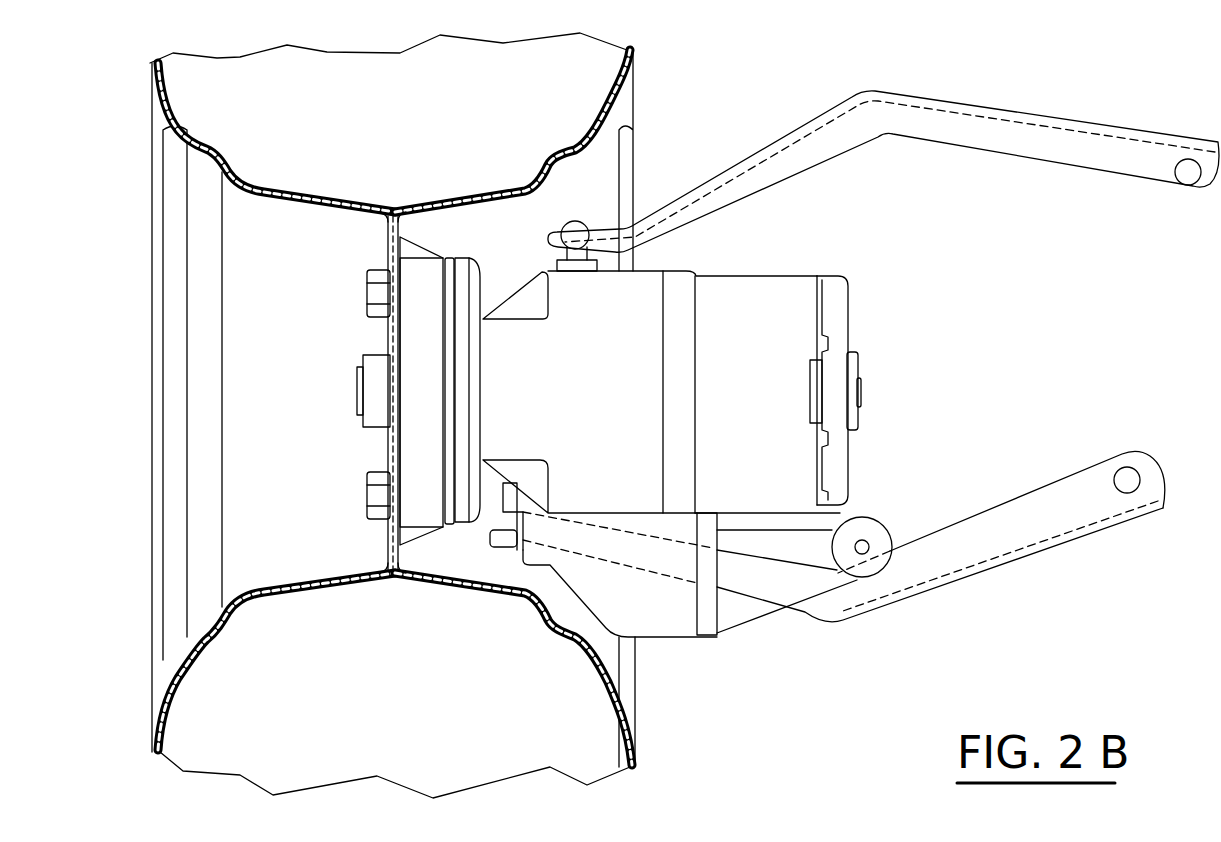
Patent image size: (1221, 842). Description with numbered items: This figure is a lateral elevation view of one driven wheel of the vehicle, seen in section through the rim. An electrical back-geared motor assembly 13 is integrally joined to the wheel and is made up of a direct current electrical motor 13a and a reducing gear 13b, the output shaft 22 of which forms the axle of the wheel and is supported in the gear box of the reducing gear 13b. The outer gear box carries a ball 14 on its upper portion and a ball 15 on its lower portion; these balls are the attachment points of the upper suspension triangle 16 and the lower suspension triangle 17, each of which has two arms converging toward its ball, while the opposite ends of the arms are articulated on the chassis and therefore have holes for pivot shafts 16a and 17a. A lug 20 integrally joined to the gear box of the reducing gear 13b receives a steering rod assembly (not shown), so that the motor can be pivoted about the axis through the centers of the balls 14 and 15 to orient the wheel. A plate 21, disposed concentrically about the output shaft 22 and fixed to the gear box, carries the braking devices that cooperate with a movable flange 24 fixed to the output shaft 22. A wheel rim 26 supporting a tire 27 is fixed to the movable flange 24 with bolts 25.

The electrical back-geared motor assembly 13 is at (742, 272).
The direct current electrical motor 13a is at (787, 307).
The reducing gear 13b is at (637, 307).
The ball 14 is at (574, 220).
The ball 15 is at (510, 557).
The upper suspension triangle 16 is at (985, 106).
The pivot shaft hole 16a is at (1188, 178).
The lower suspension triangle 17 is at (993, 570).
The pivot shaft hole 17a is at (1201, 456).
The lug 20 is at (867, 533).
The plate 21 is at (477, 270).
The output shaft 22 is at (360, 400).
The movable flange 24 is at (420, 435).
The bolts 25 is at (373, 292).
The wheel rim 26 is at (273, 203).
The tire 27 is at (153, 102).